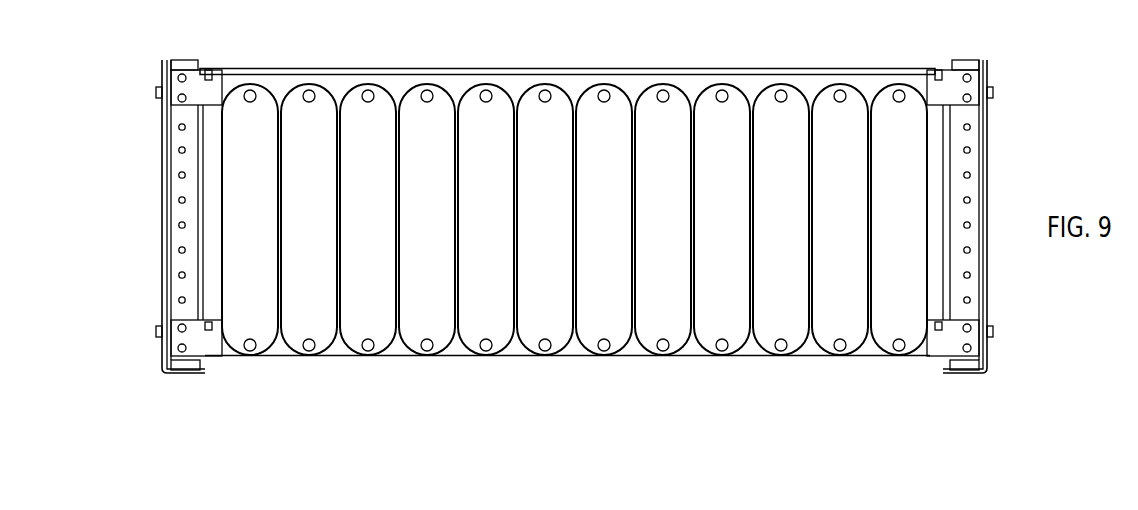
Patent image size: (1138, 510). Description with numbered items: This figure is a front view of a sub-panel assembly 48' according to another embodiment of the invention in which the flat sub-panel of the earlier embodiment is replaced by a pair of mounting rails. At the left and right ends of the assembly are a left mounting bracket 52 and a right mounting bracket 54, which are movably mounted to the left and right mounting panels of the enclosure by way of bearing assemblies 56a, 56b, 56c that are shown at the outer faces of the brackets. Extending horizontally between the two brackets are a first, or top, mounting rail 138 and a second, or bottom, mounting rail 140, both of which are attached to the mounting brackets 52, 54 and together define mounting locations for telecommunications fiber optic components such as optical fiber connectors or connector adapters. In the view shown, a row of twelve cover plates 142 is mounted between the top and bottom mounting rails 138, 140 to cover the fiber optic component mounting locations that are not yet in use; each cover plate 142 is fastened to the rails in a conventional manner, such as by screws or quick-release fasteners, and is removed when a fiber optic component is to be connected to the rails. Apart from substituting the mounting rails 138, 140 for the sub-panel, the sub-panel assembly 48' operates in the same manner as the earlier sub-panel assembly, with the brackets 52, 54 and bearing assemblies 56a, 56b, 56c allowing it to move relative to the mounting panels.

The sub-panel assembly 48' is at (631, 208).
The left mounting bracket 52 is at (190, 60).
The right mounting bracket 54 is at (962, 60).
The bearing assembly 56a is at (155, 92).
The bearing assembly 56b is at (155, 331).
The bearing assembly 56c is at (992, 91).
The first mounting rail 138 is at (702, 72).
The second mounting rail 140 is at (926, 357).
The cover plate 142 is at (559, 84).